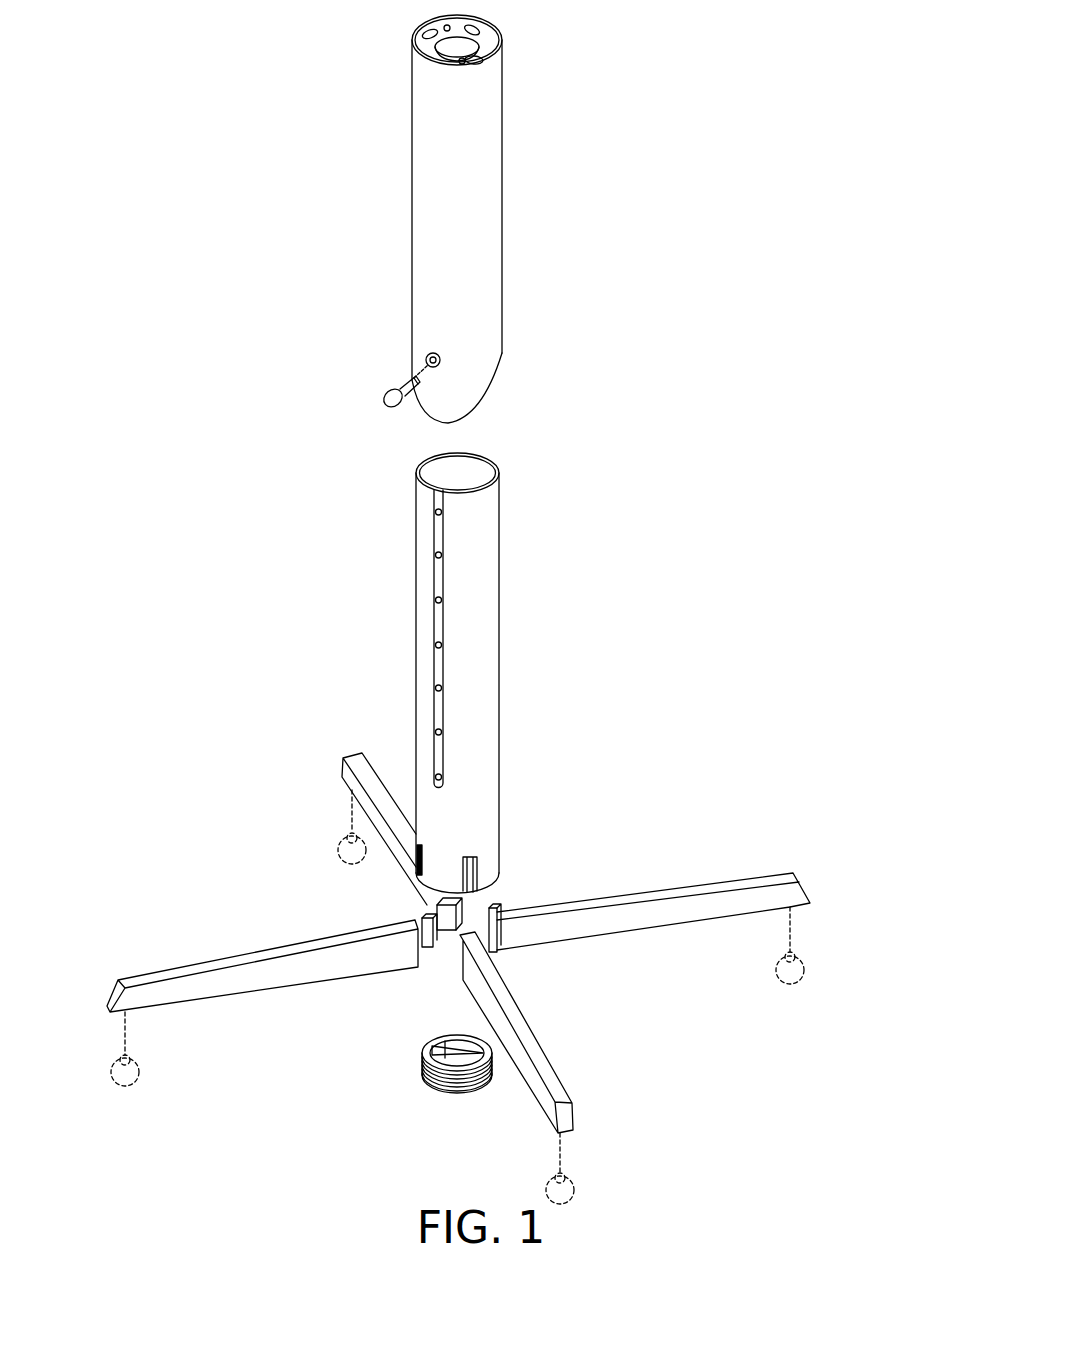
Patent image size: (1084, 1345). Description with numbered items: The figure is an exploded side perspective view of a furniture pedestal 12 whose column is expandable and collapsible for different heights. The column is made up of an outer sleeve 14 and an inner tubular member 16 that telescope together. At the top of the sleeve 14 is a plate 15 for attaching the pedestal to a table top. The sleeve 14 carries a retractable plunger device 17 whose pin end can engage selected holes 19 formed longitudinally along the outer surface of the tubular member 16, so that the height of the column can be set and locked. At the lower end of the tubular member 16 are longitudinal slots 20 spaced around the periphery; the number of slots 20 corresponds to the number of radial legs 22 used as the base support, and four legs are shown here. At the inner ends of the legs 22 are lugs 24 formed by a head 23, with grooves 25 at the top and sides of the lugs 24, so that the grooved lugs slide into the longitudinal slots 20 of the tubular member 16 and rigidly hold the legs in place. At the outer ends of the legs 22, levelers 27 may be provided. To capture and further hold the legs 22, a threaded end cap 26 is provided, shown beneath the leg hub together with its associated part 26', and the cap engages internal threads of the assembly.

The furniture pedestal 12 is at (322, 353).
The outer sleeve 14 is at (485, 174).
The plate 15 is at (412, 43).
The inner tubular member 16 is at (495, 632).
The retractable plunger device 17 is at (385, 396).
The holes 19 is at (436, 555).
The longitudinal slots 20 is at (477, 862).
The radial legs 22 is at (312, 943).
The head 23 is at (498, 928).
The lugs 24 is at (498, 927).
The grooves 25 is at (494, 910).
The threaded end cap 26 is at (411, 1083).
The collar pin 26' is at (413, 1061).
The levelers 27 is at (800, 985).